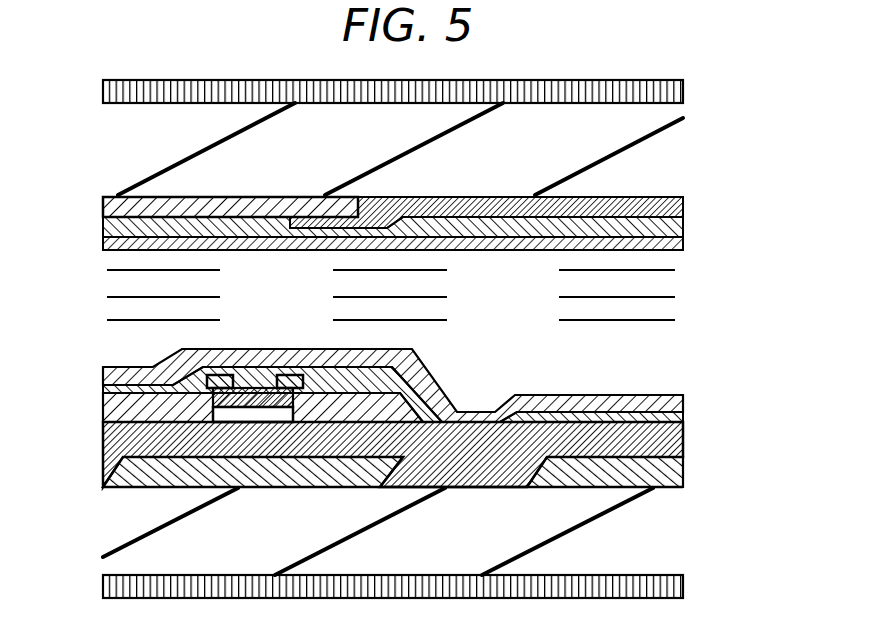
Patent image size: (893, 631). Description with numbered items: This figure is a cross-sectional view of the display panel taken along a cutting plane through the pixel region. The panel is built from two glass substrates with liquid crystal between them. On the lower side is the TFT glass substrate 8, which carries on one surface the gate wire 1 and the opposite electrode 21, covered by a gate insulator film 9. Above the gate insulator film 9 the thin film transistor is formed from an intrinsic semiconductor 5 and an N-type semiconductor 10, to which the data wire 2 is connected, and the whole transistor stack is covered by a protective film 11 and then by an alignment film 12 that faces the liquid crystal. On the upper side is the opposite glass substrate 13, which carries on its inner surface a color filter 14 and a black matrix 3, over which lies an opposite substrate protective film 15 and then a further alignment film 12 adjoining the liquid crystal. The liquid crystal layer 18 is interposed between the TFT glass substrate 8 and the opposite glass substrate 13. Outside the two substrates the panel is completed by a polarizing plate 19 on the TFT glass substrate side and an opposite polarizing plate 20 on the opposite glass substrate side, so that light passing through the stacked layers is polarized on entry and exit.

The gate wire 1 is at (103, 478).
The data wire 2 is at (103, 398).
The black matrix 3 is at (103, 207).
The intrinsic semiconductor 5 is at (165, 387).
The TFT glass substrate 8 is at (676, 522).
The gate insulator film 9 is at (683, 435).
The N-type semiconductor 10 is at (222, 410).
The protective film 11 is at (683, 413).
The alignment film 12 is at (683, 251).
The opposite glass substrate 13 is at (672, 158).
The color filter 14 is at (683, 207).
The opposite substrate protective film 15 is at (683, 232).
The liquid crystal layer 18 is at (672, 311).
The polarizing plate 19 is at (683, 590).
The opposite polarizing plate 20 is at (683, 93).
The opposite electrode 21 is at (683, 472).